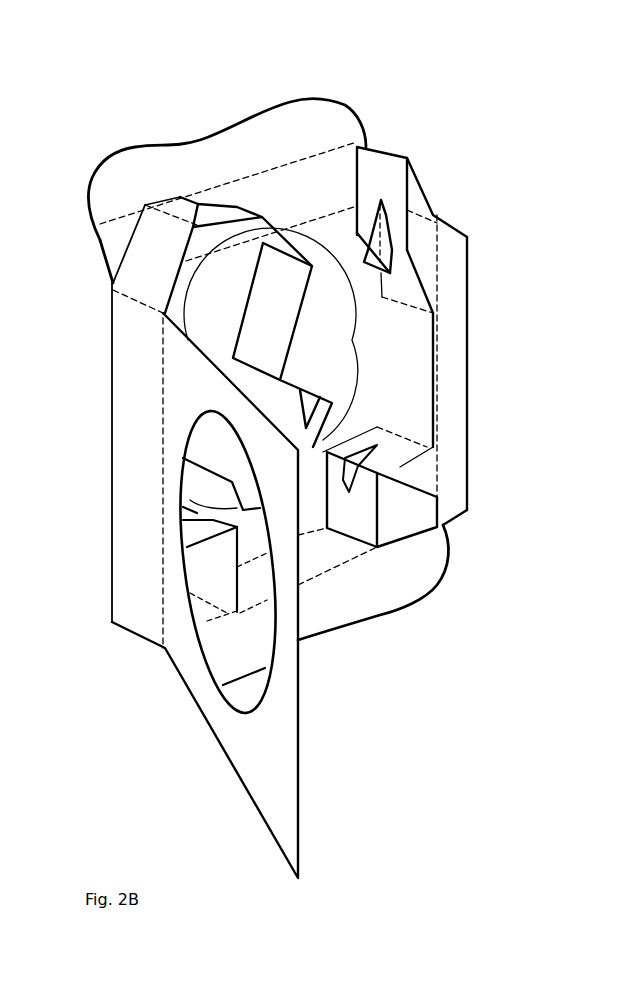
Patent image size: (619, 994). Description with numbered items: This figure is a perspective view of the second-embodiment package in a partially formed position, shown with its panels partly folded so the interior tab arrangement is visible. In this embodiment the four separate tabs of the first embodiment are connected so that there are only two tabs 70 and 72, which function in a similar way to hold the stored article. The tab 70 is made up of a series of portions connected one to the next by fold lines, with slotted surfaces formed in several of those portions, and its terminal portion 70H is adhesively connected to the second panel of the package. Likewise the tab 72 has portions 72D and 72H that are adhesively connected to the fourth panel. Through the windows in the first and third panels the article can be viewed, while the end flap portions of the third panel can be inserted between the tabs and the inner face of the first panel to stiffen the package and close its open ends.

The tab 70 is at (140, 243).
The tab portion 70H is at (243, 467).
The tab 72 is at (440, 160).
The tab portion 72D is at (407, 403).
The tab portion 72H is at (400, 505).